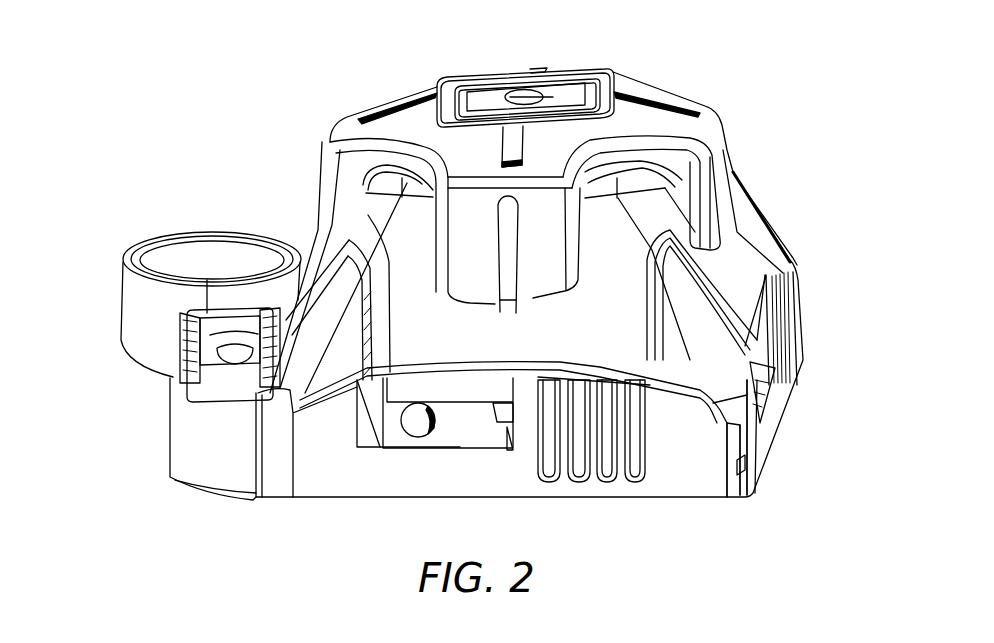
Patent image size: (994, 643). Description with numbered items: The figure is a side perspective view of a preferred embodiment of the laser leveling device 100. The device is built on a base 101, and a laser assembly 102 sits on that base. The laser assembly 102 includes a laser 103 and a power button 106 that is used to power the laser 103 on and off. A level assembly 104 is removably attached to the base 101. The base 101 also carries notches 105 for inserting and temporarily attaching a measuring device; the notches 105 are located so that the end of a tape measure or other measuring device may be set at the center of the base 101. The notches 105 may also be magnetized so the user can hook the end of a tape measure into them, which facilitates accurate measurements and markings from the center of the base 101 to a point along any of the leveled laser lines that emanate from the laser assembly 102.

The laser leveling device 100 is at (740, 110).
The base 101 is at (735, 470).
The laser assembly 102 is at (753, 203).
The laser 103 is at (508, 298).
The level assembly 104 is at (127, 317).
The notches 105 is at (390, 440).
The power button 106 is at (557, 90).